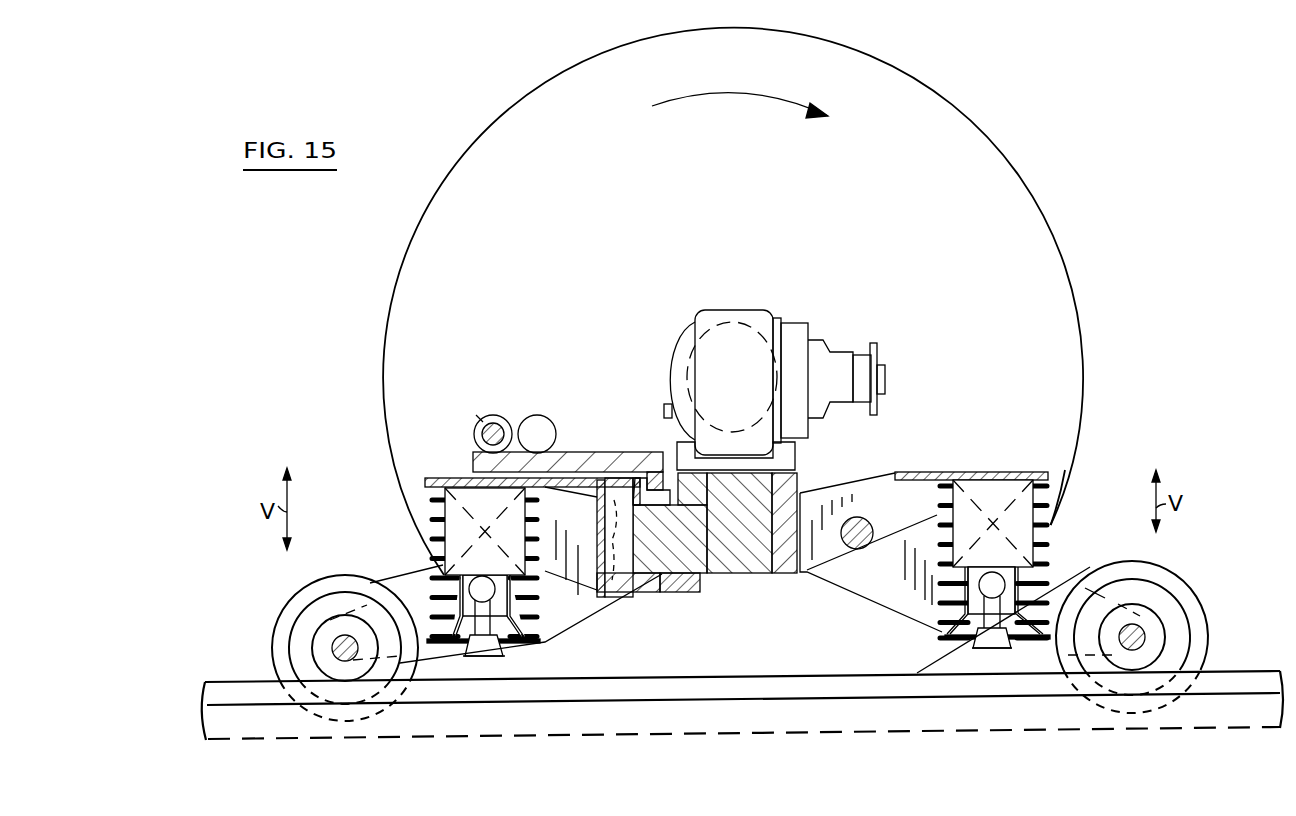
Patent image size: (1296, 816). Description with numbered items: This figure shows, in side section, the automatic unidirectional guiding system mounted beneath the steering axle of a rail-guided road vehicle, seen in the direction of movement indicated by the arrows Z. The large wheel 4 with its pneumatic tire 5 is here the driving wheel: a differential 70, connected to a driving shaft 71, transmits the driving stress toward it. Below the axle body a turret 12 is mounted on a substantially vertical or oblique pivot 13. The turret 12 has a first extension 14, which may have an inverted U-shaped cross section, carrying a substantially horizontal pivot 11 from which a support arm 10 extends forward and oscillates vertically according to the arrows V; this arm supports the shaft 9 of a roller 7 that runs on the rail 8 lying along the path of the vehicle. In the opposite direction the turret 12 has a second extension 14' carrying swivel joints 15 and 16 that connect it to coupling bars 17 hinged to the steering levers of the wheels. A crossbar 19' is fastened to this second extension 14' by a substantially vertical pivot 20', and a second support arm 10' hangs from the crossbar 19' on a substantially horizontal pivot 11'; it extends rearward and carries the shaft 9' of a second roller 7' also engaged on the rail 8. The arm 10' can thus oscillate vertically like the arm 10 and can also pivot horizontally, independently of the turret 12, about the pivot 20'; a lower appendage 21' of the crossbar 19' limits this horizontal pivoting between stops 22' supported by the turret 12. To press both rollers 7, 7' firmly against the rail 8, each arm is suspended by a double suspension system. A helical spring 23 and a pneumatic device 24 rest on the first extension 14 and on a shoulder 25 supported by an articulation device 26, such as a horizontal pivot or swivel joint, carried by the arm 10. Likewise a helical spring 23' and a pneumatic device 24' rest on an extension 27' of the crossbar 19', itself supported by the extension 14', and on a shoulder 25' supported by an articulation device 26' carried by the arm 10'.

The wheel 4 is at (1036, 240).
The pneumatic tire 5 is at (973, 122).
The direction of movement arrow Z is at (720, 93).
The roller 7 is at (1137, 625).
The second roller 7' is at (316, 648).
The rail 8 is at (1226, 674).
The shaft 9 is at (1182, 620).
The shaft of second roller 9' is at (297, 612).
The support arm 10 is at (1028, 576).
The second support arm 10' is at (496, 598).
The pivot 11 is at (871, 569).
The pivot 11' is at (670, 473).
The turret 12 is at (792, 497).
The pivot 13 is at (748, 576).
The first extension 14 is at (924, 439).
The second extension 14' is at (568, 431).
The swivel joint 15 is at (538, 426).
The swivel joint 16 is at (493, 415).
The coupling bar 17 is at (490, 432).
The crossbar 19' is at (610, 564).
The vertical pivot 20' is at (627, 564).
The lower appendage 21' is at (645, 607).
The stops 22' is at (700, 607).
The helical spring 23 is at (1004, 510).
The helical spring 23' is at (440, 555).
The pneumatic device 24 is at (993, 474).
The pneumatic device 24' is at (432, 506).
The shoulder 25 is at (936, 655).
The shoulder 25' is at (487, 684).
The articulation device 26 is at (997, 646).
The articulation device 26' is at (458, 653).
The extension of crossbar 27' is at (514, 508).
The differential 70 is at (757, 310).
The driving shaft 71 is at (886, 376).